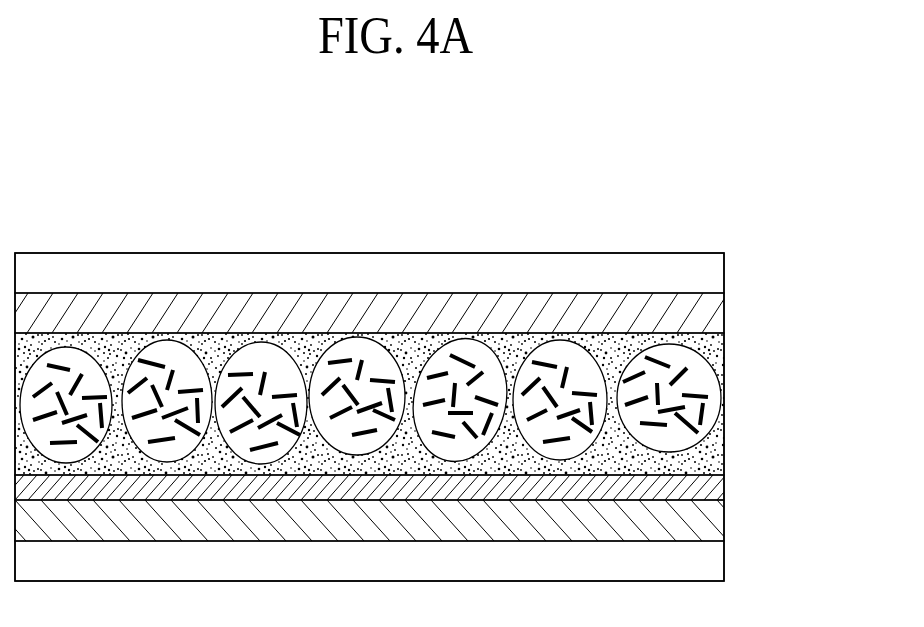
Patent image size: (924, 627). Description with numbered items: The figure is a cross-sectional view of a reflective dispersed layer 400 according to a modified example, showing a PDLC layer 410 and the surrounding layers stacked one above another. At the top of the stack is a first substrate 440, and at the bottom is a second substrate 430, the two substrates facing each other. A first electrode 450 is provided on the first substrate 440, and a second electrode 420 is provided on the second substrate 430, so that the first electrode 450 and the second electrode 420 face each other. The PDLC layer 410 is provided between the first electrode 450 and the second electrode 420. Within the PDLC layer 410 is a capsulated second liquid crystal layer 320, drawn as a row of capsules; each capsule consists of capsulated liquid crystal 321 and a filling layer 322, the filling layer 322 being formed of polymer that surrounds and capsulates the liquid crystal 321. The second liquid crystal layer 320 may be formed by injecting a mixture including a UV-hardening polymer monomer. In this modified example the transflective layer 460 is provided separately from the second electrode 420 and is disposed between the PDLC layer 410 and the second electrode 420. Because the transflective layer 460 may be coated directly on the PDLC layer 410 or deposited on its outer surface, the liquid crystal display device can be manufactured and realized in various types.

The reflective dispersed layer 400 is at (449, 368).
The PDLC layer 410 is at (409, 315).
The second electrode 420 is at (723, 529).
The second substrate 430 is at (411, 561).
The first substrate 440 is at (723, 273).
The first electrode 450 is at (723, 313).
The transflective layer 460 is at (723, 490).
The second liquid crystal layer 320 is at (275, 309).
The capsulated liquid crystal 321 is at (237, 375).
The filling layer 322 is at (298, 350).